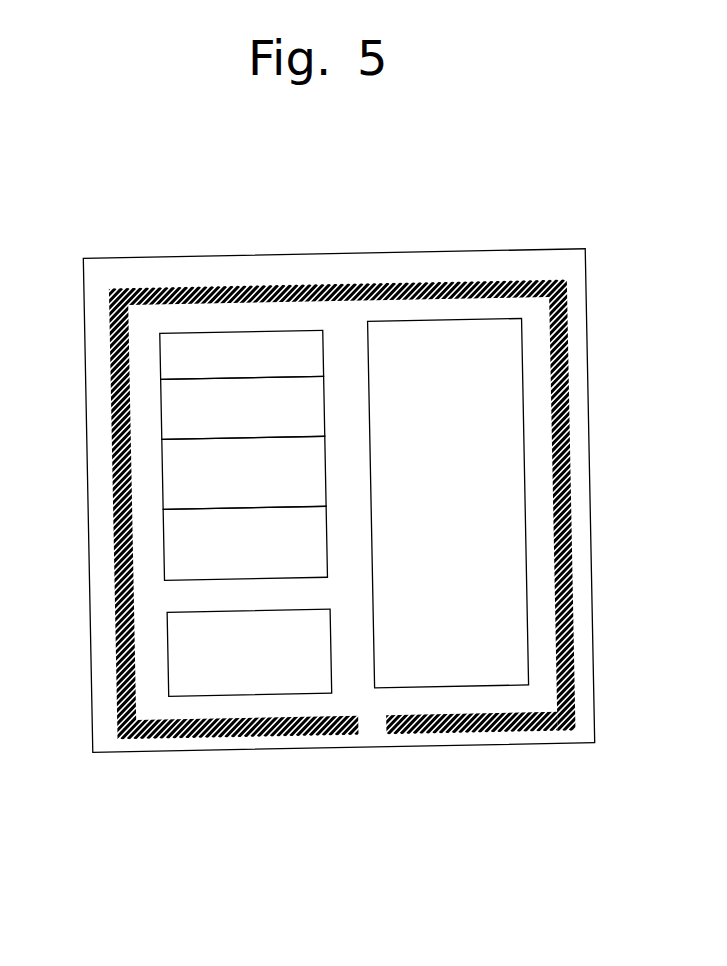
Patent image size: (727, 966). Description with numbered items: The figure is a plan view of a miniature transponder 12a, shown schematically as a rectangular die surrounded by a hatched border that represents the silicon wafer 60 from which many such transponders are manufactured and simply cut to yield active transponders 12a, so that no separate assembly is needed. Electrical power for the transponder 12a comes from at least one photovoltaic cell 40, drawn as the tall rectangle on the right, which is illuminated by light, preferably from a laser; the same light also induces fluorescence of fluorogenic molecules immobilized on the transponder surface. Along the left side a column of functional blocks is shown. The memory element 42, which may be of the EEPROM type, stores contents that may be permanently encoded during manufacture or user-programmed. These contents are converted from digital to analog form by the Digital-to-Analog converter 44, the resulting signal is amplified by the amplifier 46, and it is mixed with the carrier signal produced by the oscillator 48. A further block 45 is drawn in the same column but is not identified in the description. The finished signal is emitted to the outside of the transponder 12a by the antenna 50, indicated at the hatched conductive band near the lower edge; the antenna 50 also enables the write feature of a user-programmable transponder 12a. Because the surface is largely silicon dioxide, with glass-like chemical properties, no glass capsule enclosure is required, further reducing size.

The transponder 12a is at (232, 763).
The silicon wafer 60 is at (148, 597).
The antenna 50 is at (455, 720).
The photovoltaic cell 40 is at (448, 502).
The processor block 45 is at (242, 354).
The oscillator 48 is at (243, 407).
The Digital-to-Analog converter 44 is at (244, 472).
The amplifier 46 is at (245, 543).
The memory element 42 is at (249, 652).